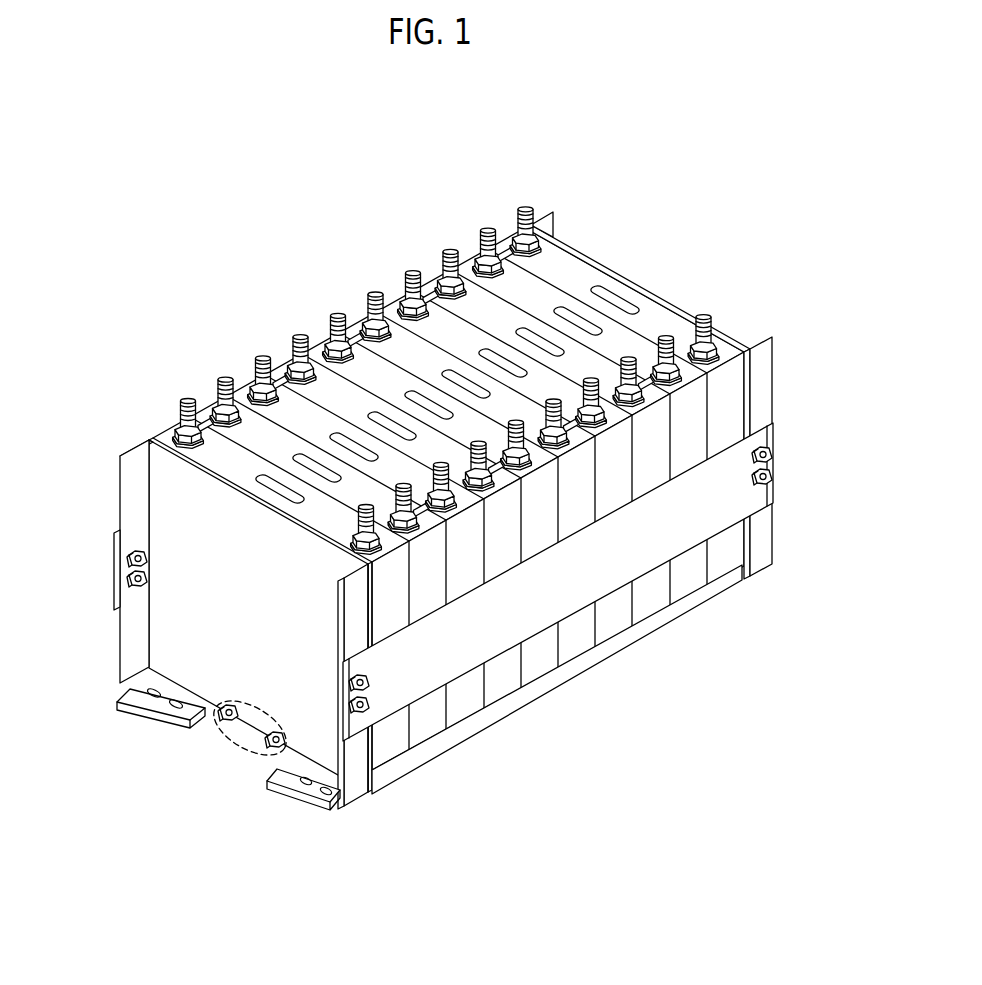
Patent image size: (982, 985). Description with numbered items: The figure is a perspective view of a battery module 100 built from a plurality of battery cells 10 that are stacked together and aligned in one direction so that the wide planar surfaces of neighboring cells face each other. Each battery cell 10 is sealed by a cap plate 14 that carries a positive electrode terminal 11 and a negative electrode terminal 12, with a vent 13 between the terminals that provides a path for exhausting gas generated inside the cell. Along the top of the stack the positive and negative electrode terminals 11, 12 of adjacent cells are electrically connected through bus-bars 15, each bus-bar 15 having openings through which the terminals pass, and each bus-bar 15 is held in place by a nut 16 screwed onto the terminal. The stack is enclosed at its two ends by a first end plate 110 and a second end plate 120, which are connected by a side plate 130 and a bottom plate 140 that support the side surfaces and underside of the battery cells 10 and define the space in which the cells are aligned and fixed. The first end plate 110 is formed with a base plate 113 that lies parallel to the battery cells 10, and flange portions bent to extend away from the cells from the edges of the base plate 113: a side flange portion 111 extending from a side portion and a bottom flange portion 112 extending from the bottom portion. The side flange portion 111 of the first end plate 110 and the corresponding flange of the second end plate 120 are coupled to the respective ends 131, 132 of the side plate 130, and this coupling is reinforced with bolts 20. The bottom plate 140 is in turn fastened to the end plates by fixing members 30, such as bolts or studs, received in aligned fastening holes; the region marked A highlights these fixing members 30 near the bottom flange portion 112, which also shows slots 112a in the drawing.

The battery module 100 is at (446, 506).
The battery cell 10 is at (428, 591).
The positive electrode terminal 11 is at (530, 208).
The negative electrode terminal 12 is at (704, 316).
The vent 13 is at (610, 290).
The cap plate 14 is at (568, 262).
The bus-bar 15 is at (208, 414).
The nut 16 is at (249, 397).
The bolt 20 is at (774, 477).
The fixing member 30 is at (265, 746).
The first end plate 110 is at (157, 625).
The side flange portion 111 is at (131, 648).
The bottom flange portion 112 is at (303, 794).
The slot of bent portion 112a is at (177, 706).
The base plate 113 is at (147, 697).
The second end plate 120 is at (728, 321).
The side plate 130 is at (114, 521).
The end of side plate 131 is at (117, 566).
The end of side plate 132 is at (770, 437).
The bottom plate 140 is at (546, 711).
The region A is at (243, 752).